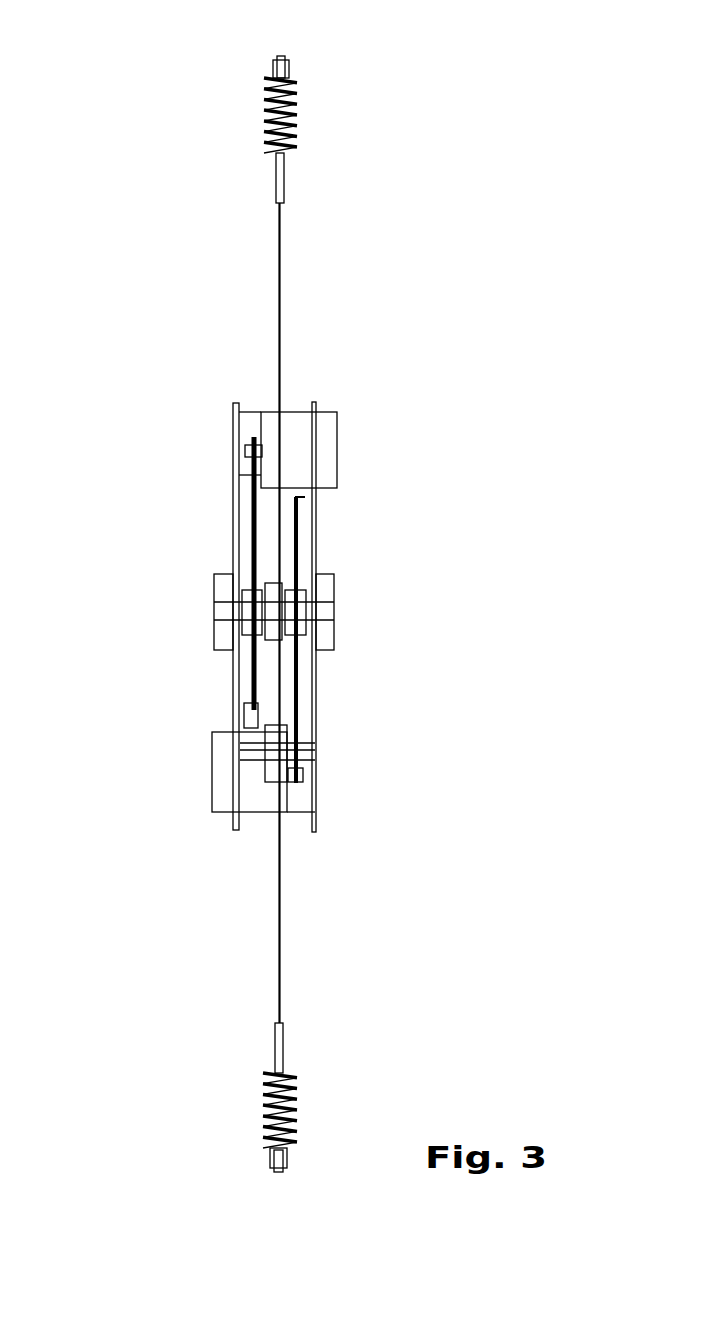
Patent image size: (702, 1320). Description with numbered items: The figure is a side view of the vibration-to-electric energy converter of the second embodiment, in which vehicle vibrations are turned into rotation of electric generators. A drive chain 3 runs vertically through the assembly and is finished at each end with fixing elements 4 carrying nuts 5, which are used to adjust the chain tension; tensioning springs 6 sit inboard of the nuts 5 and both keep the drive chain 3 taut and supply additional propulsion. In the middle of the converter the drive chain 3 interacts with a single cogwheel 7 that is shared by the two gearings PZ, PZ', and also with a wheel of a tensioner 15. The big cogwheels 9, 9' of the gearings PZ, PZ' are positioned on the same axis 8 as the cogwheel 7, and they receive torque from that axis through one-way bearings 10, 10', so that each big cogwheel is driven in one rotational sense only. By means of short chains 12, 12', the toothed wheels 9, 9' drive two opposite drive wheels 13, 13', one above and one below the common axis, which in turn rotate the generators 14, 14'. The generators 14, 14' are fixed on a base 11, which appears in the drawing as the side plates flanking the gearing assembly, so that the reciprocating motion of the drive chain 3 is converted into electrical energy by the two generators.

The drive chain 3 is at (276, 340).
The fixing element 4 is at (278, 194).
The nut 5 is at (271, 72).
The tensioning spring 6 is at (268, 122).
The cogwheel 7 is at (271, 632).
The axis 8 is at (221, 618).
The big cogwheel 9 is at (178, 724).
The big cogwheel 9' is at (346, 730).
The one-way bearing 10 is at (173, 589).
The one-way bearing 10' is at (352, 597).
The base 11 is at (236, 404).
The short chain 12 is at (171, 743).
The short chain 12' is at (358, 478).
The drive wheel 13 is at (173, 421).
The drive wheel 13' is at (353, 790).
The generator 14 is at (325, 437).
The generator 14' is at (196, 799).
The tensioner 15 is at (273, 764).
The gearing PZ is at (165, 573).
The gearing PZ' is at (358, 640).